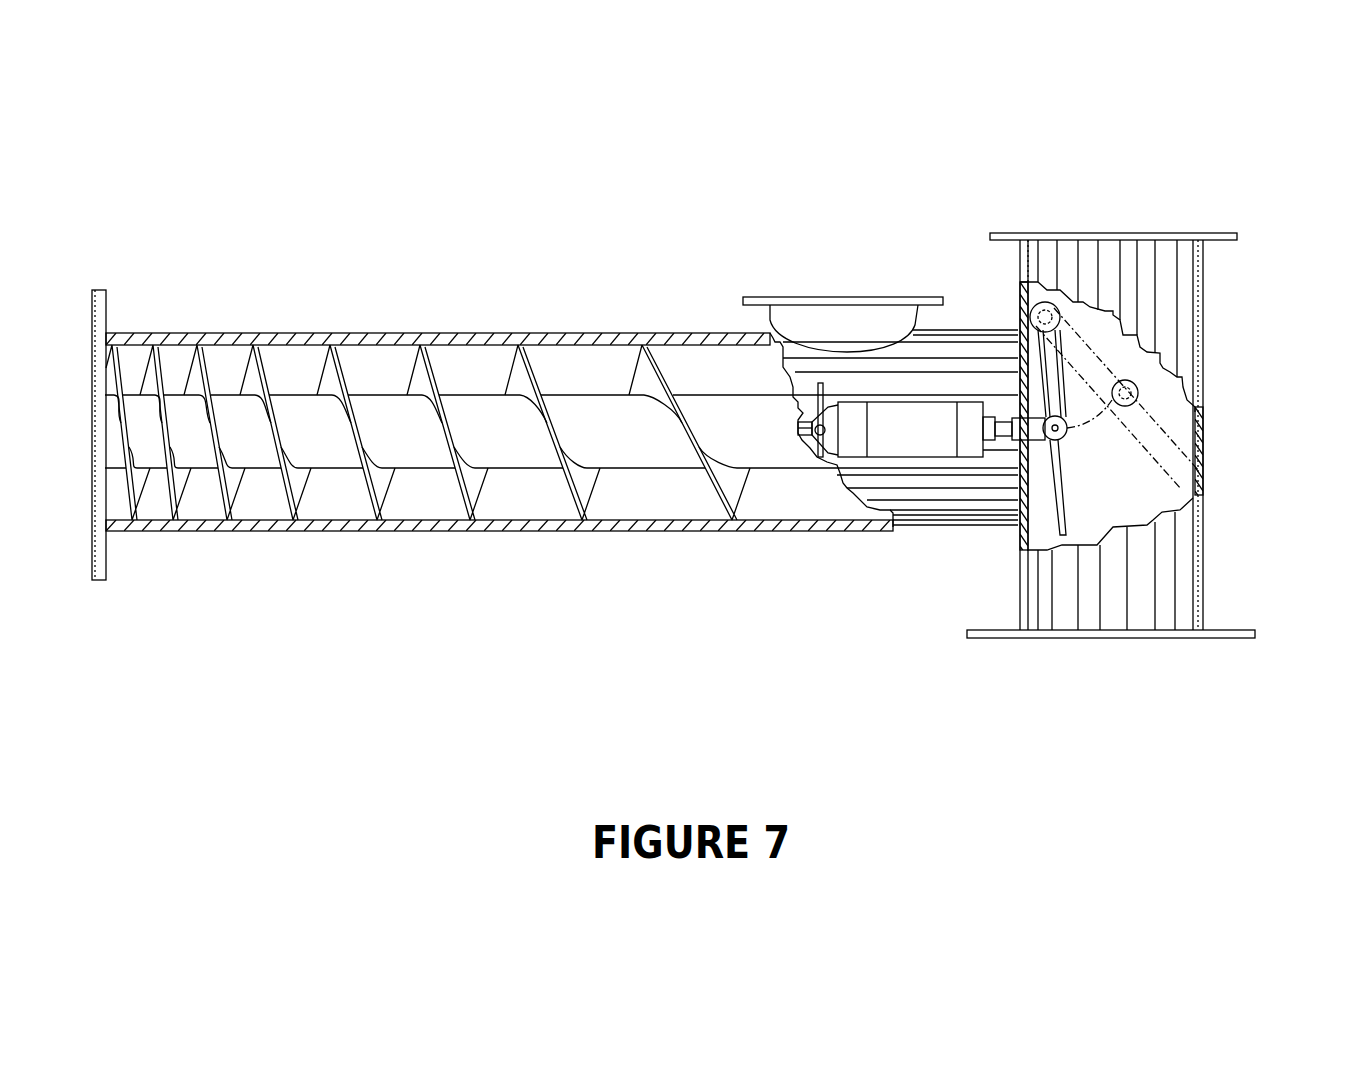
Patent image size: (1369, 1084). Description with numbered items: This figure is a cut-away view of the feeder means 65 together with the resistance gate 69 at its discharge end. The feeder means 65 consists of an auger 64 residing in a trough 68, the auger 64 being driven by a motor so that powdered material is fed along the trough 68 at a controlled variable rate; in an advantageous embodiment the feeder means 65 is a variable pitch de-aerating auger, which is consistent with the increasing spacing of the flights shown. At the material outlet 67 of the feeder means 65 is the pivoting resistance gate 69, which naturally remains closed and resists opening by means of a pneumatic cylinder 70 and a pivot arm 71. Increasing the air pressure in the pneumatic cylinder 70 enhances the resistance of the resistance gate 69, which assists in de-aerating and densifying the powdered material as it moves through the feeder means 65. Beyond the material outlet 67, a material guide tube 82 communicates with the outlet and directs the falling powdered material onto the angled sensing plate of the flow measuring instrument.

The auger 64 is at (393, 453).
The feeder means 65 is at (440, 279).
The material outlet 67 is at (997, 395).
The trough 68 is at (673, 485).
The resistance gate 69 is at (1061, 490).
The pneumatic cylinder 70 is at (885, 423).
The pivot arm 71 is at (1058, 337).
The material guide tube 82 is at (1205, 512).